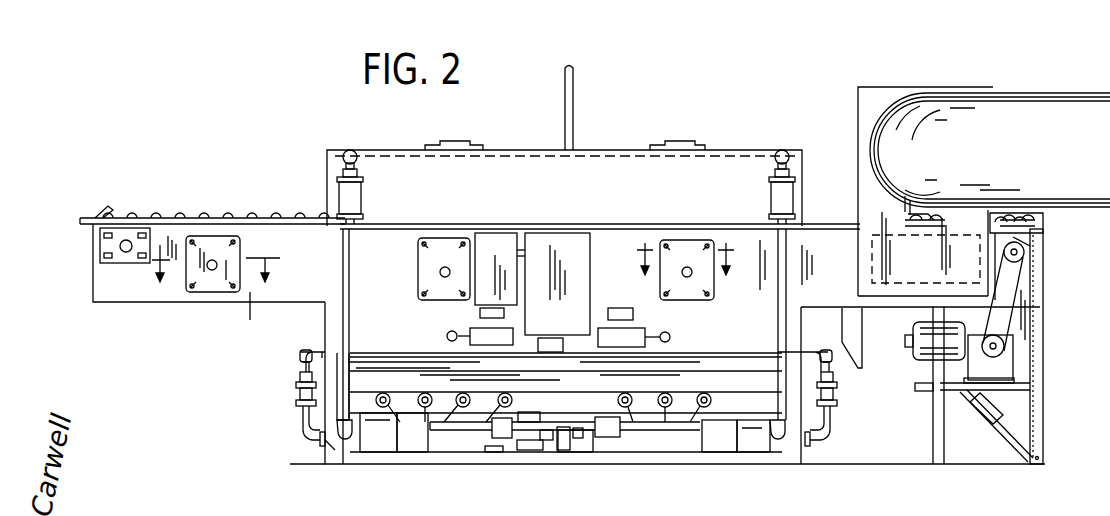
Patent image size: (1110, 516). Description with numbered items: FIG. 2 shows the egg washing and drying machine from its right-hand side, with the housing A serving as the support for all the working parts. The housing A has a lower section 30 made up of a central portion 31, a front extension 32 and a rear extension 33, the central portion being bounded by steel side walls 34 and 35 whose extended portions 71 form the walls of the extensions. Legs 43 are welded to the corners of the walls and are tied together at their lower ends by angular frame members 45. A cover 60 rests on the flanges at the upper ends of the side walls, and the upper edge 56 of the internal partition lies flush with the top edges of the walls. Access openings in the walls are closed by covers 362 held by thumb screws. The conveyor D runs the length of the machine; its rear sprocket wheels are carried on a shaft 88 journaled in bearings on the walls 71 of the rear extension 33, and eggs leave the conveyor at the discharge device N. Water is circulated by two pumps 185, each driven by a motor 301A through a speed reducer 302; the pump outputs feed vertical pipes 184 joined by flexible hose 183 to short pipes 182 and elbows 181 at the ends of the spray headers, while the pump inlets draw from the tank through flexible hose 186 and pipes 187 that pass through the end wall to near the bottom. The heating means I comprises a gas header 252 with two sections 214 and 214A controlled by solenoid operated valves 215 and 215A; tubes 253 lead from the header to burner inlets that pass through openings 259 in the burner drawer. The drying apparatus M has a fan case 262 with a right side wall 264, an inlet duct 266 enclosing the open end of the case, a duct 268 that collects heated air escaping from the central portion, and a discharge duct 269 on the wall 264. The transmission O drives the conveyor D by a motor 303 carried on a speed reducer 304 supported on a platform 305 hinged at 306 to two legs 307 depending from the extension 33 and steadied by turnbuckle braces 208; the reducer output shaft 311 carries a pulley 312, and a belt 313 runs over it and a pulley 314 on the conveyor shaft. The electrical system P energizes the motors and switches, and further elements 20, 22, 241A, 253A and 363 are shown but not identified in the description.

The workpiece carrier flow direction 20 is at (215, 266).
The flow direction arrows 22 is at (686, 266).
The lower section 30 is at (330, 322).
The central portion 31 is at (615, 240).
The front extension 32 is at (136, 296).
The rear extension 33 is at (830, 298).
The wall 34 is at (440, 234).
The wall 35 is at (766, 316).
The legs 43 is at (330, 443).
The angular frame member 45 is at (666, 460).
The upper edge of partition 56 is at (125, 262).
The cover 60 is at (617, 160).
The extended portions of walls 71 is at (902, 300).
The shaft 88 is at (1030, 236).
The L 181 is at (353, 152).
The short length of pipe 182 is at (358, 172).
The flexible hose 183 is at (352, 200).
The vertical pipe 184 is at (350, 328).
The water pump 185 is at (346, 445).
The flexible hose 186 is at (298, 403).
The pipe 187 is at (300, 357).
The adjustable brace 208 is at (988, 416).
The header section 214 is at (462, 428).
The header section 214A is at (648, 428).
The solenoid operated valve 215 is at (502, 440).
The solenoid operated valve 215A is at (606, 440).
The spray nozzle 241A is at (722, 406).
The gas header 252 is at (546, 420).
The tube 253 is at (422, 395).
The spray nozzles 253A is at (665, 395).
The opening 259 is at (502, 394).
The case 262 is at (990, 88).
The right side wall 264 is at (866, 106).
The duct 266 is at (870, 261).
The duct 268 is at (856, 334).
The duct 269 is at (1055, 110).
The motor 301A is at (415, 445).
The speed reducer 302 is at (380, 445).
The motor 303 is at (914, 352).
The speed reducer 304 is at (1010, 365).
The platform 305 is at (924, 392).
The hinge 306 is at (1032, 388).
The leg 307 is at (1045, 433).
The output shaft 311 is at (1005, 344).
The pulley 312 is at (1018, 300).
The belt 313 is at (1012, 292).
The pulley 314 is at (1025, 252).
The cover 362 is at (236, 258).
The carrier plate 363 is at (707, 244).
The housing A is at (330, 308).
The conveyor D is at (174, 208).
The heating means I is at (578, 412).
The drying apparatus M is at (905, 80).
The discharge device N is at (90, 212).
The transmission O is at (972, 340).
The electrical system P is at (585, 292).